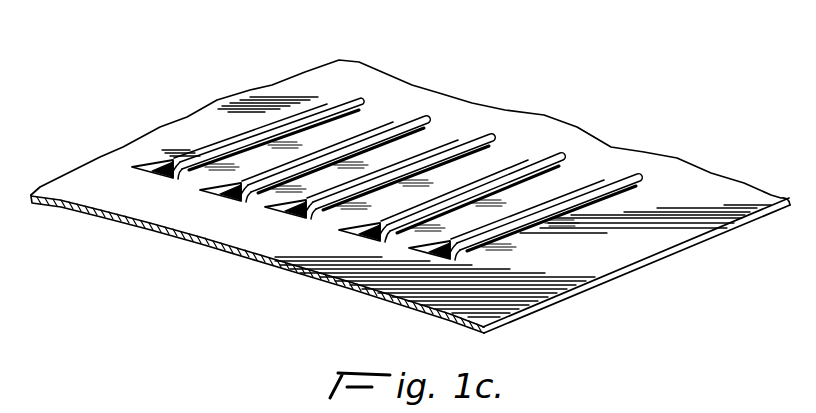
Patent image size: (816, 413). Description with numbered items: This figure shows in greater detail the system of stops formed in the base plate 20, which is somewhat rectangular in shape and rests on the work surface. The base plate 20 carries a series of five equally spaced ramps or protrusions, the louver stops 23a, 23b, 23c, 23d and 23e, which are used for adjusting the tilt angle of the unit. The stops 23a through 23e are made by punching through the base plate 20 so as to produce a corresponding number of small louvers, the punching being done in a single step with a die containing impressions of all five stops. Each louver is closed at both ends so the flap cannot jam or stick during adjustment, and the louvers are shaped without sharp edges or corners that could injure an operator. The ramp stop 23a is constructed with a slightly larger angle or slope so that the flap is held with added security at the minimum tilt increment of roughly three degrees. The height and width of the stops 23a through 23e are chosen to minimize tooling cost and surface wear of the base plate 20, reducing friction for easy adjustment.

The base plate 20 is at (205, 230).
The ramp stop 23a is at (343, 95).
The louver stop 23b is at (413, 116).
The louver stop 23c is at (486, 136).
The louver stop 23d is at (550, 154).
The louver stop 23e is at (615, 178).